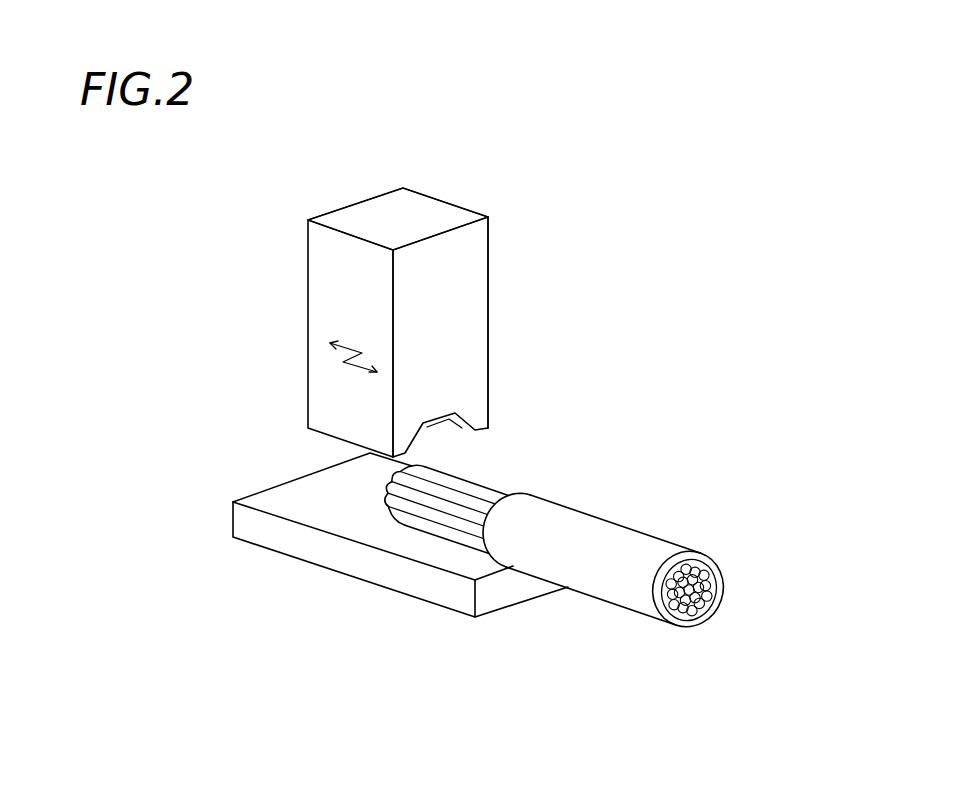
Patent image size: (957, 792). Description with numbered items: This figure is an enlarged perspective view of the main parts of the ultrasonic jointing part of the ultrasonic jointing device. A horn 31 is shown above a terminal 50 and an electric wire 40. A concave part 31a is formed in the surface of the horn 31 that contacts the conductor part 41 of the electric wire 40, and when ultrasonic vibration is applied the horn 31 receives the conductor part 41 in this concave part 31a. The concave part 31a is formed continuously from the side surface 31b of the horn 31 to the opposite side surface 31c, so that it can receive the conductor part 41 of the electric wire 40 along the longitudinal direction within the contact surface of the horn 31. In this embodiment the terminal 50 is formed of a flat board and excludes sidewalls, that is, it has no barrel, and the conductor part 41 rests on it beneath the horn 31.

The horn 31 is at (480, 237).
The concave part 31a is at (462, 427).
The side surface 31b is at (482, 325).
The opposite side surface 31c is at (336, 211).
The electric wire 40 is at (683, 547).
The conductor part 41 is at (497, 487).
The terminal 50 is at (437, 590).